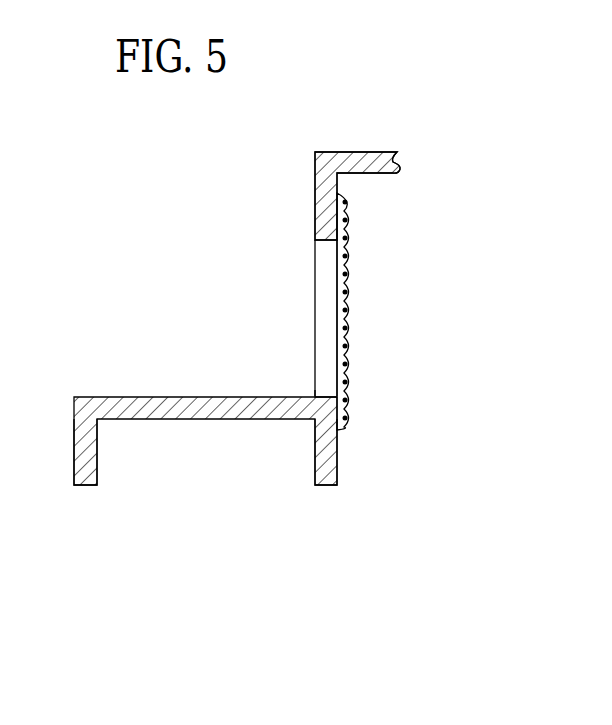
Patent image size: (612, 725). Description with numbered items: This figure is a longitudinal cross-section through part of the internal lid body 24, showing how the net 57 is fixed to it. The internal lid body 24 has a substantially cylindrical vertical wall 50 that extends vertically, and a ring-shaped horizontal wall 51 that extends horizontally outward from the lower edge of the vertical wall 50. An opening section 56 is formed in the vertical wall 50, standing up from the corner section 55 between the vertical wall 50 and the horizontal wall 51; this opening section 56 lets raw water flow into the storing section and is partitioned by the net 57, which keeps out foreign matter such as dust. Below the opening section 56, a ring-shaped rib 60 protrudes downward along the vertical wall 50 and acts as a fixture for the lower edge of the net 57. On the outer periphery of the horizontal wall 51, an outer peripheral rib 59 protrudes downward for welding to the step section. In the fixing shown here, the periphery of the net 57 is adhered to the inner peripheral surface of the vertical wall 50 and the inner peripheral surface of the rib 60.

The internal lid body 24 is at (357, 152).
The vertical wall 50 is at (315, 187).
The horizontal wall 51 is at (147, 396).
The corner section 55 is at (313, 396).
The opening section 56 is at (325, 268).
The net 57 is at (352, 306).
The outer peripheral rib 59 is at (86, 485).
The rib 60 is at (330, 485).